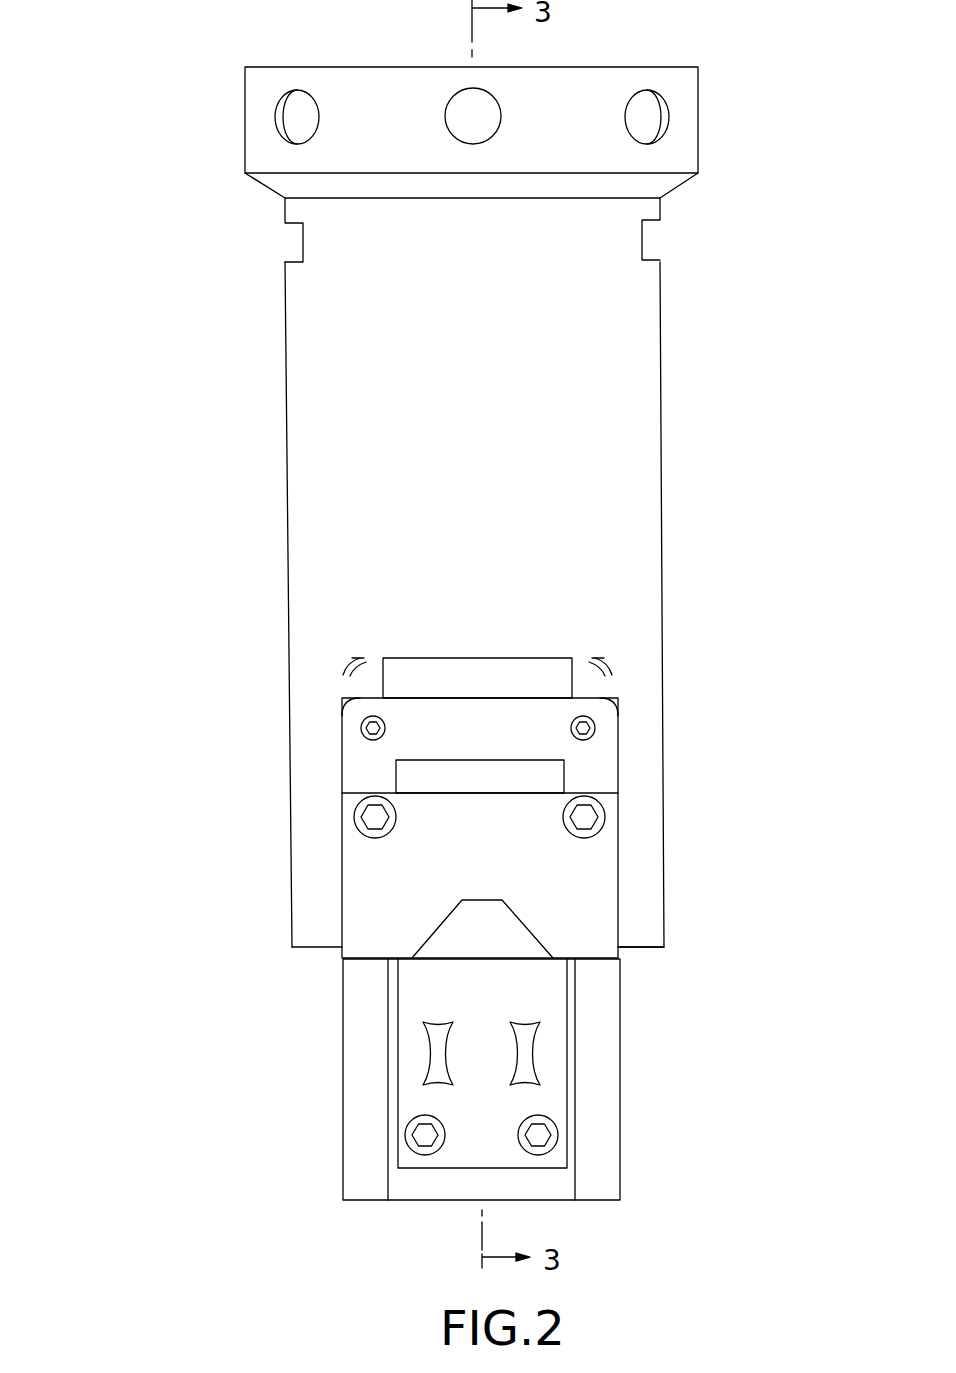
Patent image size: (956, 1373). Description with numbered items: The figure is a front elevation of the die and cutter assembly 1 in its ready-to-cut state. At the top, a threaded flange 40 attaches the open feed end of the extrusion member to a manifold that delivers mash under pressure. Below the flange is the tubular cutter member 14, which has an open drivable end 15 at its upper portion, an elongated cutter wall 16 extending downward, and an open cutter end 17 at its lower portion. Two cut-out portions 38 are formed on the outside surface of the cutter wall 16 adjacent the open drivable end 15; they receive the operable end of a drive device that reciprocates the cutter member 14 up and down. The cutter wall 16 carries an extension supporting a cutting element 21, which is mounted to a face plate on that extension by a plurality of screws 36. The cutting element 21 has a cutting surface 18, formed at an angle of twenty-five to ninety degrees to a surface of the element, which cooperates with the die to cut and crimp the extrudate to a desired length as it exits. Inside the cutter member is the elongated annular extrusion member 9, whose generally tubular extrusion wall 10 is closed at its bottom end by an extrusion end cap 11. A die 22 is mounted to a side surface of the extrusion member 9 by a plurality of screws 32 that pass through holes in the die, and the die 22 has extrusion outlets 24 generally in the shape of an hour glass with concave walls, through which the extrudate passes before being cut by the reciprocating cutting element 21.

The die and cutter assembly 1 is at (168, 200).
The threaded flange 40 is at (245, 110).
The open drivable end 15 is at (667, 188).
The cut-out portions 38 is at (295, 247).
The elongated cutter wall 16 is at (298, 548).
The tubular cutter member 14 is at (672, 569).
The open cutter end 17 is at (295, 931).
The cutting element 21 is at (603, 892).
The screws 36 is at (577, 815).
The cutting surface 18 is at (475, 932).
The annular extrusion member 9 is at (350, 1032).
The extrusion wall 10 is at (365, 1162).
The extrusion end cap 11 is at (390, 1200).
The die 22 is at (463, 1150).
The extrusion outlets 24 is at (437, 1053).
The screws 32 is at (408, 1133).